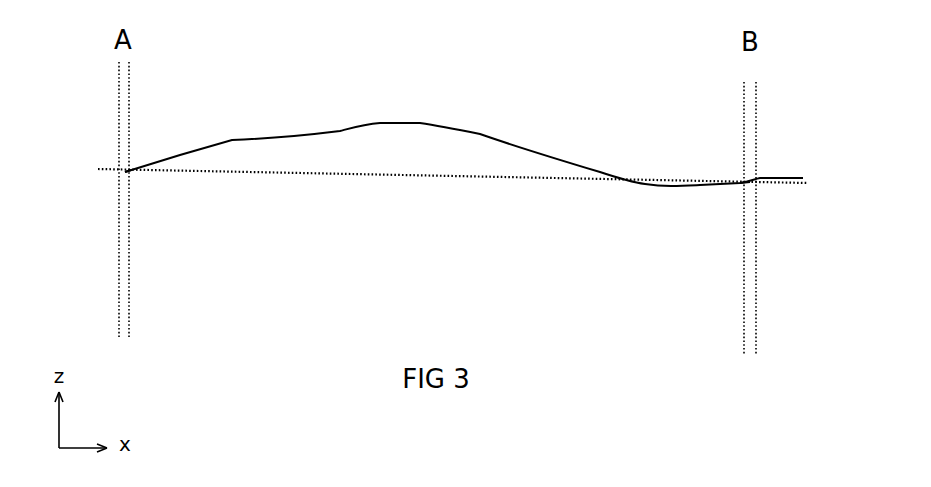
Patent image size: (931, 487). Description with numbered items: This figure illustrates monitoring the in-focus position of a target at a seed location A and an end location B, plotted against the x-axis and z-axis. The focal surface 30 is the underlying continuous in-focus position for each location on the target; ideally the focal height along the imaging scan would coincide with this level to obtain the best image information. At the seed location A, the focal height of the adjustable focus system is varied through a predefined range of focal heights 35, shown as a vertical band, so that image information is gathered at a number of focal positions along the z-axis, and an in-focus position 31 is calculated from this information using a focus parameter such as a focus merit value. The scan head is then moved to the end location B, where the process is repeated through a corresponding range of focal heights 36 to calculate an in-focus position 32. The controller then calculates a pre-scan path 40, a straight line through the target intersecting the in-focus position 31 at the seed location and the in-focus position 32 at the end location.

The focal surface 30 is at (365, 122).
The in-focus position at seed location A 31 is at (122, 176).
The in-focus position at end location B 32 is at (748, 196).
The predefined range of focal heights 35 is at (125, 158).
The predefined range of focal heights at end location 36 is at (752, 177).
The pre-scan path 40 is at (503, 177).